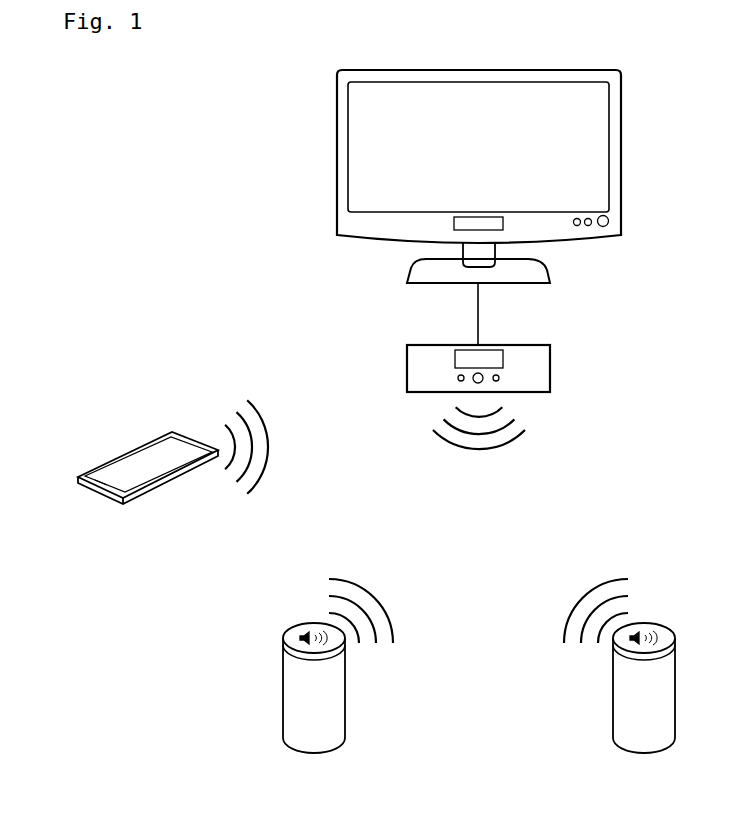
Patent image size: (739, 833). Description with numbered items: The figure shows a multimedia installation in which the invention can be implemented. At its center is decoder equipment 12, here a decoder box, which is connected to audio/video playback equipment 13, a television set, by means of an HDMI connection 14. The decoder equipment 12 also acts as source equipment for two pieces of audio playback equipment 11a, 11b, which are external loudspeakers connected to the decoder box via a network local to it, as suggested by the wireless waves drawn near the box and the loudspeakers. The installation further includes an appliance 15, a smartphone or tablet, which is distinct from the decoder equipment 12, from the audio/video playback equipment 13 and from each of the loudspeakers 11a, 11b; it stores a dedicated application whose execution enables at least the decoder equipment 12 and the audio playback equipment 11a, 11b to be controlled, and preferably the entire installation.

The audio playback equipment 11a is at (297, 757).
The audio playback equipment 11b is at (625, 757).
The decoder equipment 12 is at (551, 392).
The audio/video playback equipment 13 is at (548, 283).
The HDMI connection 14 is at (477, 327).
The appliance 15 is at (115, 444).